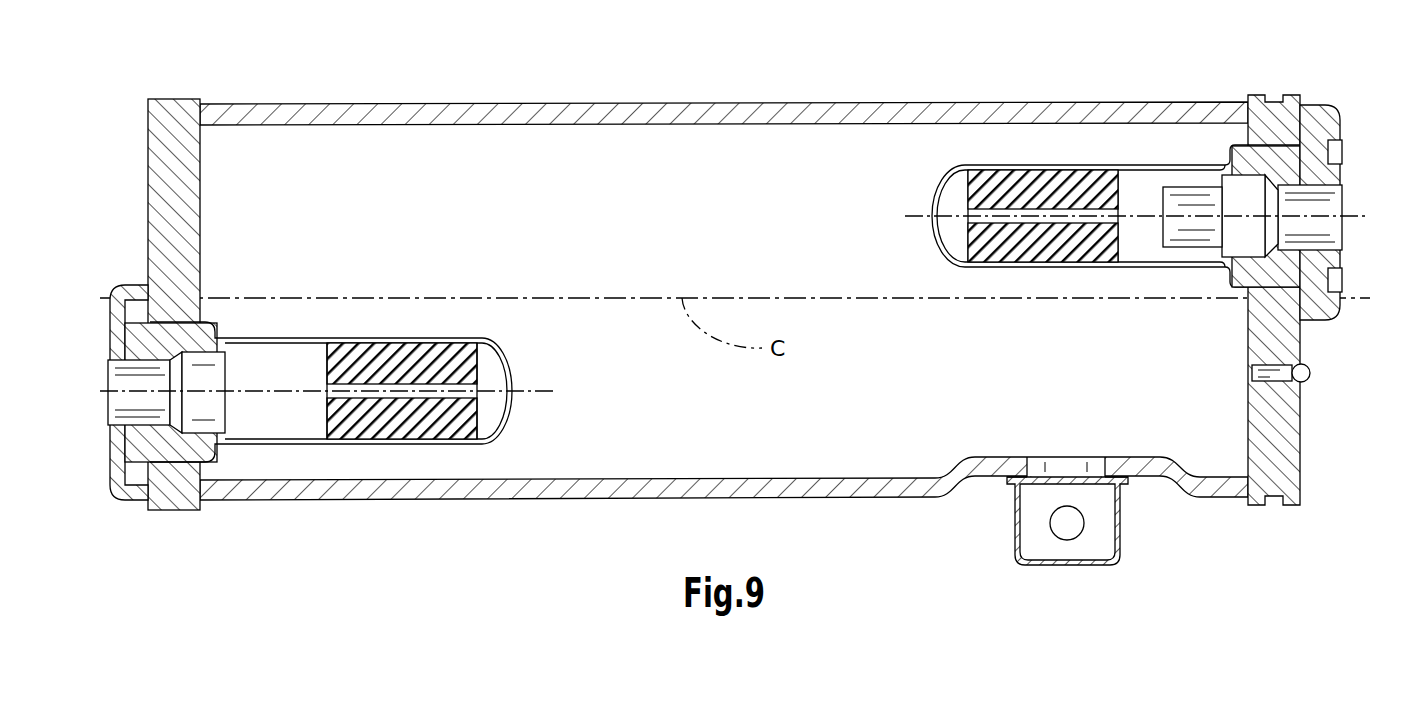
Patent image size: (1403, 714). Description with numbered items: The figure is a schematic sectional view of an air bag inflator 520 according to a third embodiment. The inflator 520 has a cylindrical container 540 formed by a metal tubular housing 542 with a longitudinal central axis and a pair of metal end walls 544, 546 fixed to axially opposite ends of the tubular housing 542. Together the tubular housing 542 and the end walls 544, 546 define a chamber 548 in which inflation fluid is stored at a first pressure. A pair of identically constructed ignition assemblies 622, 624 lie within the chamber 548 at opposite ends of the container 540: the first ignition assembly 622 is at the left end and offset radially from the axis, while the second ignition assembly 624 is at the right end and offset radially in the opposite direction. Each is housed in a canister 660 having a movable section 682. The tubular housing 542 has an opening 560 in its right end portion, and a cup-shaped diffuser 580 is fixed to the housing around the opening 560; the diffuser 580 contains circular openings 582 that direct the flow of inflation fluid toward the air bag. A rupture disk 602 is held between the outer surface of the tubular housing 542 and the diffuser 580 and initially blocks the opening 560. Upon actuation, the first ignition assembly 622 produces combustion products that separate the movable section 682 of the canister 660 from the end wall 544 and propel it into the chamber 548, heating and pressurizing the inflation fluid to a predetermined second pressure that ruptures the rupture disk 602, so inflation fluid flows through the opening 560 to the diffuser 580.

The air bag inflator 520 is at (1126, 86).
The cylindrical container 540 is at (1253, 88).
The tubular housing 542 is at (790, 108).
The end wall 544 is at (160, 232).
The end wall 546 is at (1277, 451).
The chamber 548 is at (671, 204).
The opening 560 is at (1098, 476).
The cup-shaped diffuser 580 is at (1012, 490).
The circular openings 582 is at (1050, 528).
The rupture disk 602 is at (1083, 480).
The first ignition assembly 622 is at (370, 324).
The second ignition assembly 624 is at (1058, 278).
The canister 660 is at (438, 333).
The movable section 682 is at (300, 340).